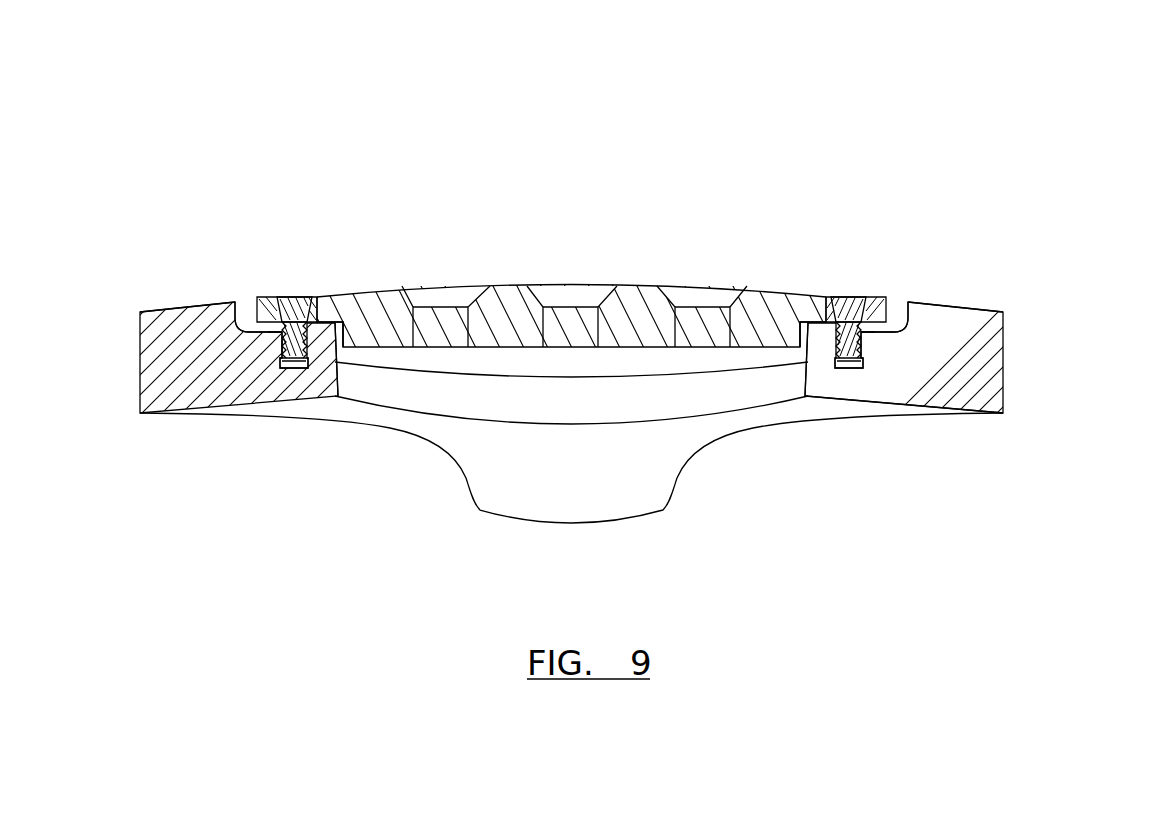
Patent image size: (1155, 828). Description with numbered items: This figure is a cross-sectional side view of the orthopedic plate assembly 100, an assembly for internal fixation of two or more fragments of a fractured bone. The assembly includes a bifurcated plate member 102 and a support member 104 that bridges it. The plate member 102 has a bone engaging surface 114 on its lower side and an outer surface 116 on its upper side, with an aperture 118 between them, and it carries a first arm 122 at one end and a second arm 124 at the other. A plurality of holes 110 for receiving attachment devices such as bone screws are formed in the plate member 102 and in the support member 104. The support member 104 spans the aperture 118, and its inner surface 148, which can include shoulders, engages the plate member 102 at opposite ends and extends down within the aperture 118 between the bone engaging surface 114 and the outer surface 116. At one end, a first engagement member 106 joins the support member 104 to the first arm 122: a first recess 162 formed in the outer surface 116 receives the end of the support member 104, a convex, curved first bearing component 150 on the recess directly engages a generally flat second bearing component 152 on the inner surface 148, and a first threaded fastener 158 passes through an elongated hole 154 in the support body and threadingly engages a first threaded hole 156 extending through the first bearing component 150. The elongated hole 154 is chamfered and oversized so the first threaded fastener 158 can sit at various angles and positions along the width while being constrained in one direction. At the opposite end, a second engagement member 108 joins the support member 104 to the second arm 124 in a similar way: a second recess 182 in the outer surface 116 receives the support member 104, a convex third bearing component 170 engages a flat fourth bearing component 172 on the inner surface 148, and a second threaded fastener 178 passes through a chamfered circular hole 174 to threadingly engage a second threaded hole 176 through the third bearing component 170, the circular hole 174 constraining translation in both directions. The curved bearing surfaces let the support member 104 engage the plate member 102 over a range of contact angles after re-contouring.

The orthopedic plate assembly 100 is at (257, 144).
The bifurcated plate member 102 is at (163, 364).
The support member 104 is at (638, 292).
The first engagement member 106 is at (884, 343).
The second engagement member 108 is at (272, 346).
The holes 110 is at (542, 288).
The bone engaging surface 114 is at (947, 413).
The outer surface 116 is at (197, 308).
The aperture 118 is at (587, 371).
The first arm 122 is at (970, 308).
The second arm 124 is at (177, 312).
The inner surface 148 is at (395, 352).
The first bearing component 150 is at (812, 308).
The second bearing component 152 is at (805, 352).
The elongated hole 154 is at (848, 308).
The first threaded hole 156 is at (882, 352).
The first threaded fastener 158 is at (850, 369).
The first recess 162 is at (898, 308).
The third bearing component 170 is at (333, 308).
The fourth bearing component 172 is at (340, 376).
The circular hole 174 is at (307, 308).
The second threaded hole 176 is at (290, 369).
The second threaded fastener 178 is at (278, 350).
The second recess 182 is at (240, 308).